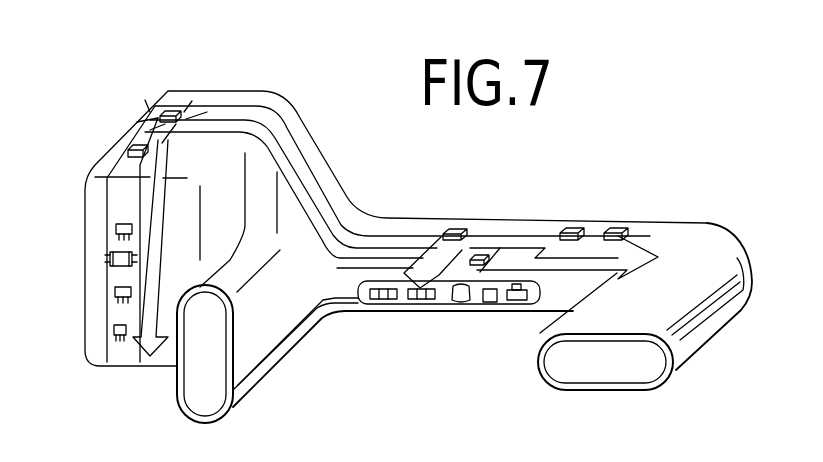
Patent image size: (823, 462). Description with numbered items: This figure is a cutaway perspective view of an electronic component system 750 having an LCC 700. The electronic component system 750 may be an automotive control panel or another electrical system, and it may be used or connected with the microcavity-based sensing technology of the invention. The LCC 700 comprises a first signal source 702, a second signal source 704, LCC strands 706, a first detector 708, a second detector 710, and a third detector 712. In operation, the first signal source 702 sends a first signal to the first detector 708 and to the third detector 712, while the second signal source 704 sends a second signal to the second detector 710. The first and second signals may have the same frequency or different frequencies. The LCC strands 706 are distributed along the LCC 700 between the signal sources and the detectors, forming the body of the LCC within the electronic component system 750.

The electronic component system 750 is at (320, 86).
The LCC 700 is at (232, 127).
The first signal source 702 is at (167, 103).
The second signal source 704 is at (460, 231).
The LCC strands 706 is at (120, 193).
The first detector 708 is at (110, 323).
The second detector 710 is at (517, 303).
The third detector 712 is at (617, 231).